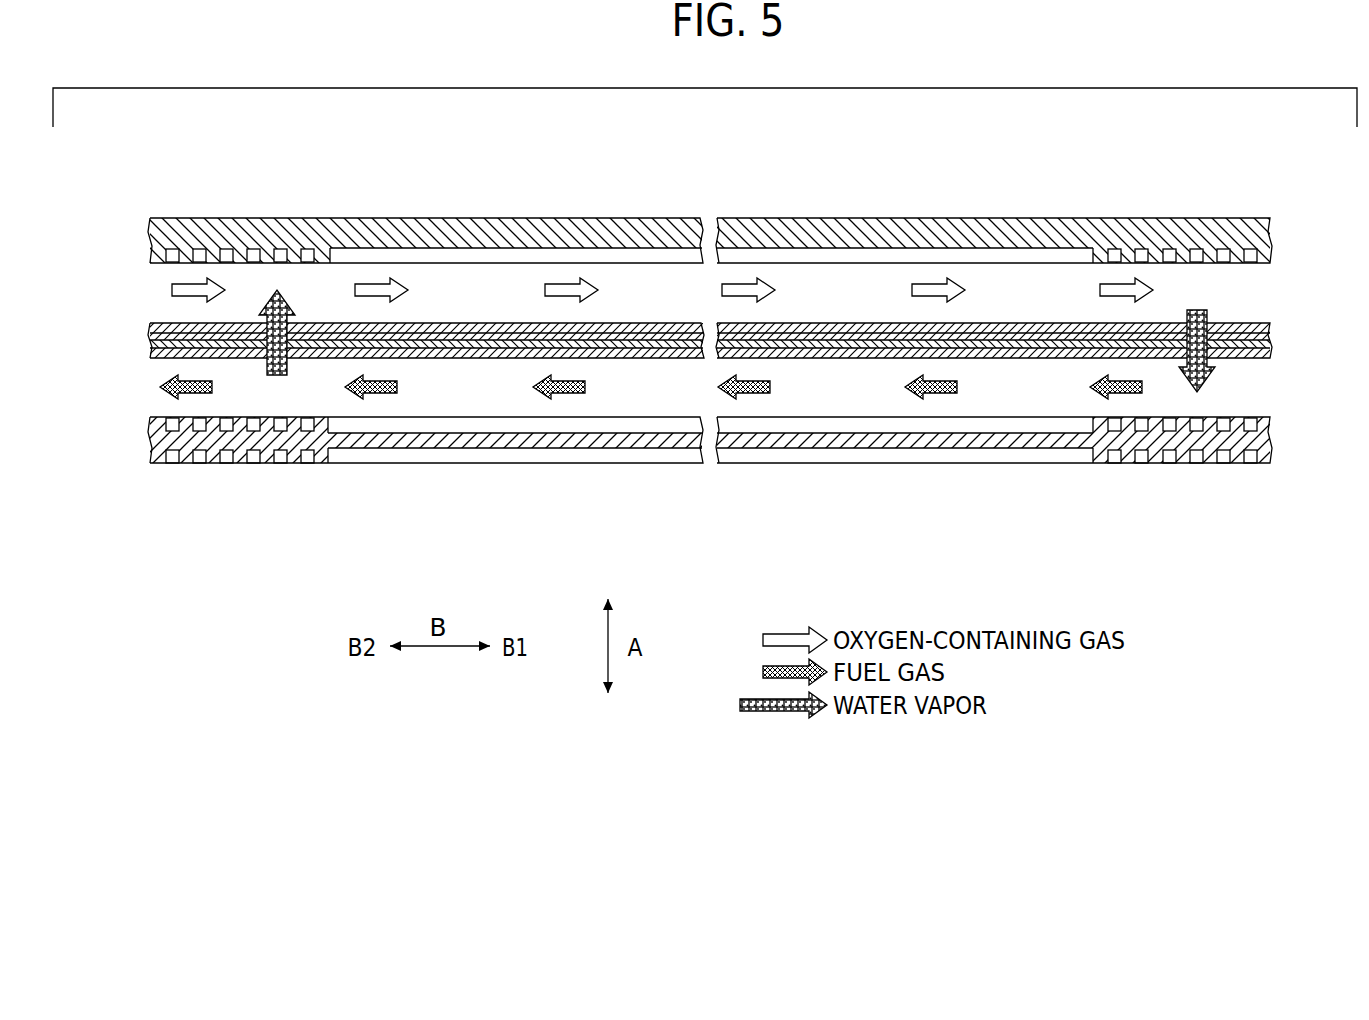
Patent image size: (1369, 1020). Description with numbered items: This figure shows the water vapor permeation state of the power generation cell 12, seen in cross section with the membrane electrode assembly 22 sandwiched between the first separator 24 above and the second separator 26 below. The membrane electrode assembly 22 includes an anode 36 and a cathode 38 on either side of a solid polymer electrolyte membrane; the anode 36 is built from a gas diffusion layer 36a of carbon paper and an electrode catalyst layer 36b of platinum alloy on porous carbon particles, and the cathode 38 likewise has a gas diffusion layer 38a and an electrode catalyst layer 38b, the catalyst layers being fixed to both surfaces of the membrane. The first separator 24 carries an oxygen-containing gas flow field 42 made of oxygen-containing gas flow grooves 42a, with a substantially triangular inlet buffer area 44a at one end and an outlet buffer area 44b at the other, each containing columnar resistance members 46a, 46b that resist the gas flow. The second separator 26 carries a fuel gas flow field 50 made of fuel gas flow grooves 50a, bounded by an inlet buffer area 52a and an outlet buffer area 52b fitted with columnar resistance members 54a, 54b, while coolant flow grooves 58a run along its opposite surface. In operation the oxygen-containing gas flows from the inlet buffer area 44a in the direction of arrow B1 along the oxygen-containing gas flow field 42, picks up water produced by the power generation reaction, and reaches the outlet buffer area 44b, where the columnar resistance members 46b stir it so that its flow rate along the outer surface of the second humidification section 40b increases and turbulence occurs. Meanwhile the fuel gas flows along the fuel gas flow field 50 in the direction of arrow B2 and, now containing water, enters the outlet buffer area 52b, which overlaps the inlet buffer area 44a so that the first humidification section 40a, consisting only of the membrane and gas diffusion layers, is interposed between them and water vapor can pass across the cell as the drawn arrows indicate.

The fuel cell 12 is at (922, 140).
The membrane electrode assembly 22 is at (704, 341).
The first separator 24 is at (705, 232).
The second separator 26 is at (704, 455).
The anode 36 is at (742, 449).
The gas diffusion layer 36a is at (1017, 358).
The electrode catalyst layer 36b is at (978, 352).
The cathode 38 is at (741, 232).
The gas diffusion layer 38a is at (440, 324).
The electrode catalyst layer 38b is at (483, 338).
The first humidification section 40a is at (238, 360).
The second humidification section 40b is at (1176, 362).
The oxygen-containing gas flow field 42 is at (639, 276).
The oxygen-containing gas flow grooves 42a is at (797, 260).
The inlet buffer area 44a is at (227, 256).
The outlet buffer area 44b is at (1168, 258).
The columnar resistance members 46a is at (187, 259).
The columnar resistance members 46b is at (1237, 262).
The fuel gas flow field 50 is at (635, 397).
The fuel gas flow grooves 50a is at (468, 422).
The inlet buffer area 52a is at (1167, 429).
The outlet buffer area 52b is at (228, 424).
The columnar resistance members 54a is at (1237, 425).
The columnar resistance members 54b is at (188, 424).
The coolant flow grooves 58a is at (680, 455).